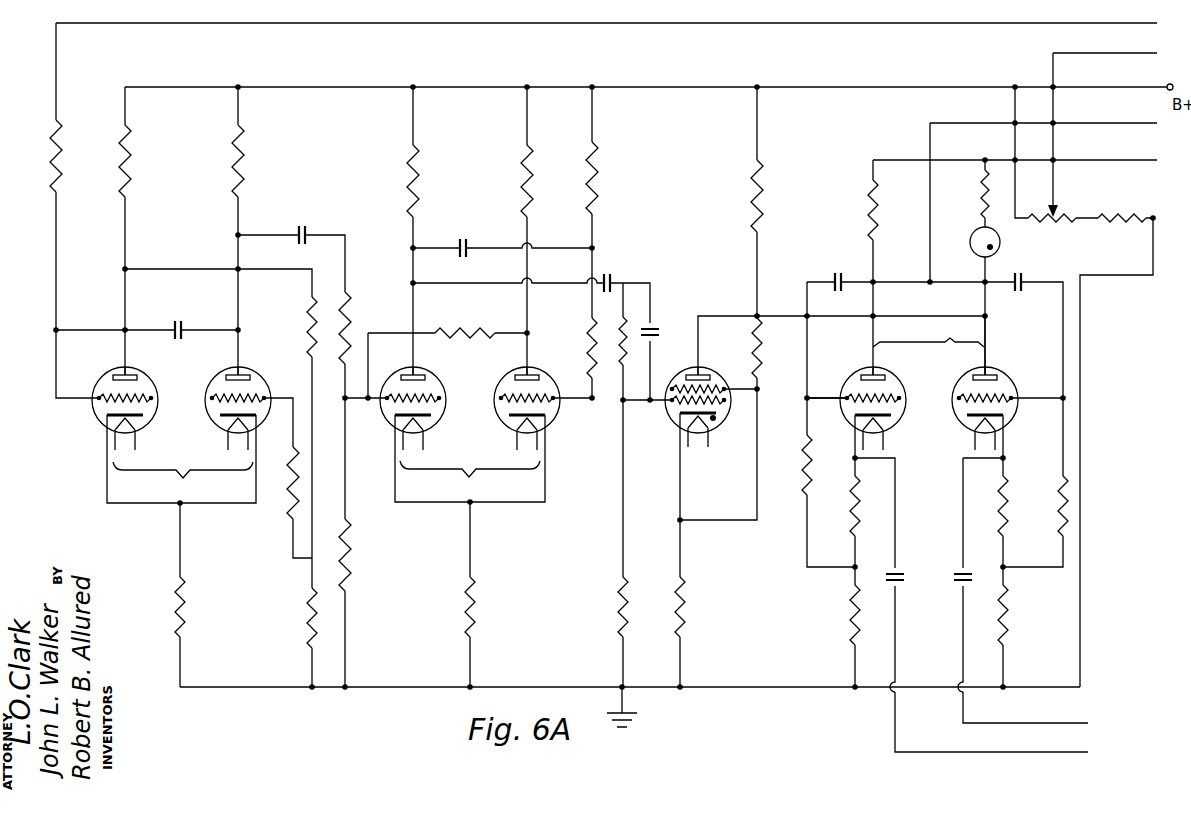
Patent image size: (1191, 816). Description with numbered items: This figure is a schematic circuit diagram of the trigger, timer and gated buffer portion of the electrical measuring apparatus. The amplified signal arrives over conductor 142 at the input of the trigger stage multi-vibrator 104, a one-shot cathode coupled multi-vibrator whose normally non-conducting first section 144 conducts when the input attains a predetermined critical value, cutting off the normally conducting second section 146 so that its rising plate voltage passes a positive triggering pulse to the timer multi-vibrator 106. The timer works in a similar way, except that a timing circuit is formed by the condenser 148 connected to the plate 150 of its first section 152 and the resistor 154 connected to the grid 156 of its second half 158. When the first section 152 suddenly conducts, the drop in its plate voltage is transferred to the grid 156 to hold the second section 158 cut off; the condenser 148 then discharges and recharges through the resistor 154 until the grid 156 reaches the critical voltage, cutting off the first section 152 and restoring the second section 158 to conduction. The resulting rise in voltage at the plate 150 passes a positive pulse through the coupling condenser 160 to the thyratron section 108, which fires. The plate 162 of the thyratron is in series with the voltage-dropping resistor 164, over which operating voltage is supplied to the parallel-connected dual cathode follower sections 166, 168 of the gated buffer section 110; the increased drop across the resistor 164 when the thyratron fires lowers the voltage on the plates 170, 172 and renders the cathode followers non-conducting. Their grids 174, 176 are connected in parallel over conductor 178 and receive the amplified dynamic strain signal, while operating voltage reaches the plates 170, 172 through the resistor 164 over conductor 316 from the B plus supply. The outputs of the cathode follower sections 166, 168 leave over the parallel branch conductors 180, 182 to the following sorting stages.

The conductor 142 is at (56, 372).
The first section 144 is at (103, 428).
The second section 146 is at (212, 428).
The multi-vibrator 104 is at (183, 478).
The condenser 148 is at (466, 248).
The plate 150 is at (413, 378).
The first section 152 is at (386, 425).
The resistor 154 is at (598, 190).
The grid 156 is at (541, 398).
The second half 158 is at (547, 378).
The coupling condenser 160 is at (610, 283).
The regenerative multi-vibrator 106 is at (469, 477).
The thyratron section 108 is at (676, 376).
The plate 162 is at (700, 376).
The voltage-dropping resistor 164 is at (874, 225).
The cathode follower section 166 is at (848, 426).
The cathode follower section 168 is at (1013, 412).
The plate 170 is at (880, 376).
The plate 172 is at (993, 378).
The grid 174 is at (855, 393).
The grid 176 is at (1012, 398).
The conductor 178 is at (1088, 123).
The conductor 316 is at (1098, 160).
The gated buffer section 110 is at (938, 333).
The branch conductor 180 is at (1033, 723).
The branch conductor 182 is at (1055, 752).